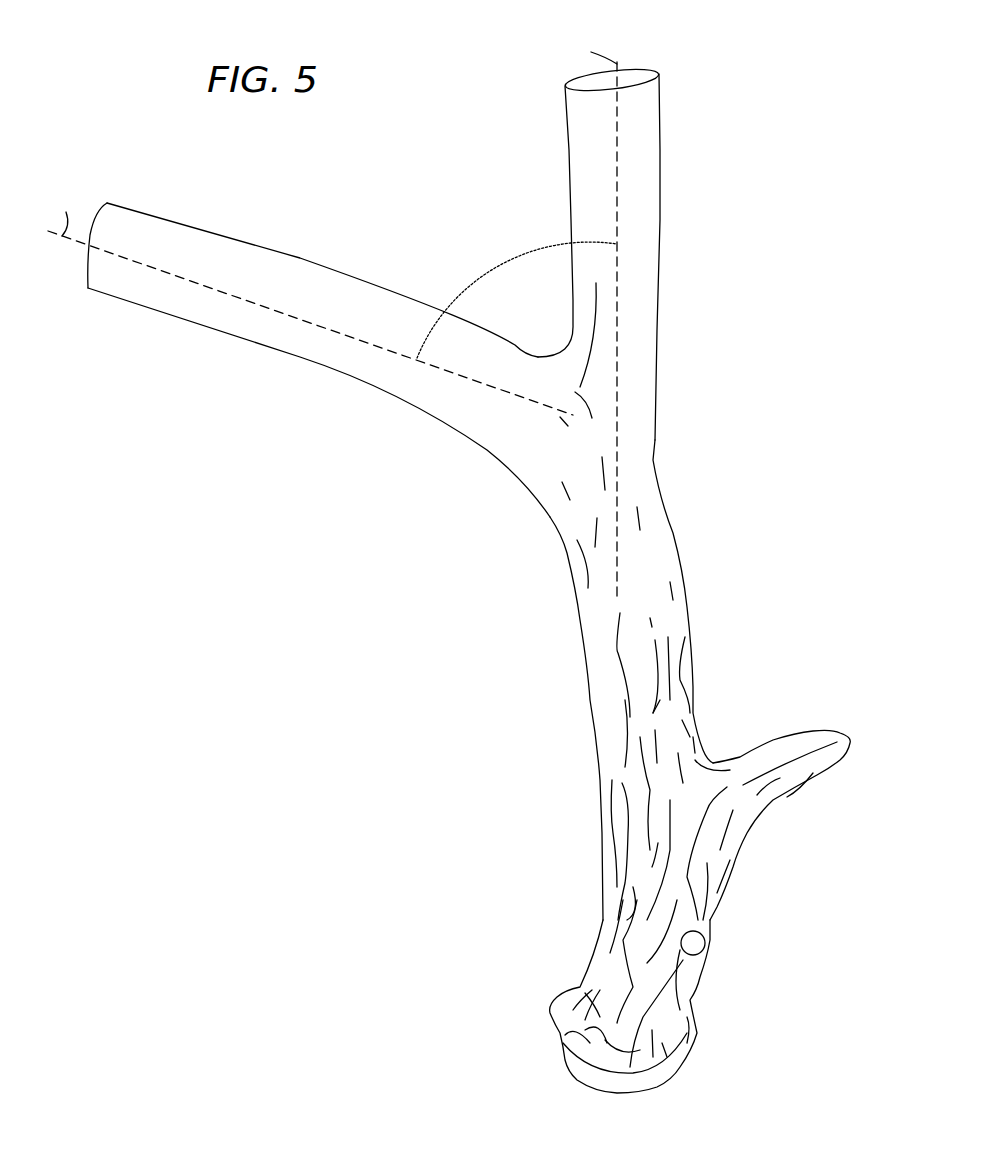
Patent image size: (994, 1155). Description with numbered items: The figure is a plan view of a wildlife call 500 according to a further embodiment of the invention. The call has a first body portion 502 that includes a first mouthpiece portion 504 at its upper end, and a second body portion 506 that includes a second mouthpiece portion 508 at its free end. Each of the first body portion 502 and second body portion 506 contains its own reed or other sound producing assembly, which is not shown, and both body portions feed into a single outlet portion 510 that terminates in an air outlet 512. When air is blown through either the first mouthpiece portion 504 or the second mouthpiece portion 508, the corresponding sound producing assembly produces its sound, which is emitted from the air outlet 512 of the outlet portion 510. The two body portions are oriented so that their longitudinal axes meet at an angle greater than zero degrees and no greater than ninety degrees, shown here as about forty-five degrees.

The wildlife call 500 is at (216, 449).
The first body portion 502 is at (661, 223).
The first mouthpiece portion 504 is at (628, 77).
The second body portion 506 is at (166, 313).
The second mouthpiece portion 508 is at (88, 262).
The outlet portion 510 is at (693, 683).
The air outlet 512 is at (580, 1078).